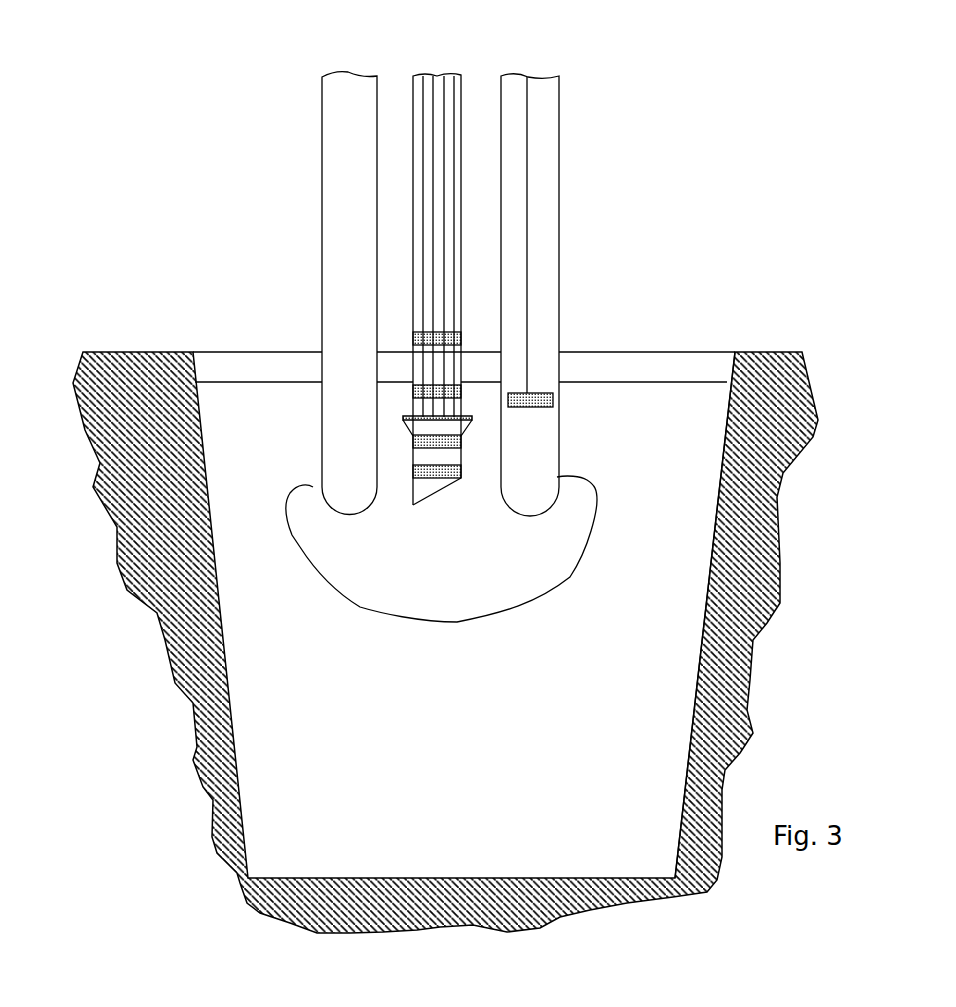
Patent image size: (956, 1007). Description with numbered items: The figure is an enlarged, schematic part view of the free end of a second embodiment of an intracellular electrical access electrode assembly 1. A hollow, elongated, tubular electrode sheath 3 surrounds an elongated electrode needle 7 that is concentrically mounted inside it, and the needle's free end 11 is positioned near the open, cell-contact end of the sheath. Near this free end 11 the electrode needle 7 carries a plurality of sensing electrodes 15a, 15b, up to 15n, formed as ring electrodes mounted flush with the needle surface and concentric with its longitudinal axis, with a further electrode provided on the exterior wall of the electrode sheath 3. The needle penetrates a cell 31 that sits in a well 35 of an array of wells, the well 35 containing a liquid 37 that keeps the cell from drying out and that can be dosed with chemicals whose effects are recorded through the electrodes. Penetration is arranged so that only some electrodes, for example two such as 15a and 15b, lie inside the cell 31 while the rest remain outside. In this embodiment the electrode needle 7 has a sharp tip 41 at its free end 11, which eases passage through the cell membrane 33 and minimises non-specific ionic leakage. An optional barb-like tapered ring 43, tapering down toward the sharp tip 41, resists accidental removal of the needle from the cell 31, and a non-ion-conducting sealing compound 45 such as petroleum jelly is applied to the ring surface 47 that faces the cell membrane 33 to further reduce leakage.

The electrode assembly 1 is at (608, 127).
The electrode sheath 3 is at (552, 196).
The electrode needle 7 is at (462, 150).
The free end 11 is at (416, 495).
The sensing electrode 15a is at (413, 465).
The sensing electrode 15b is at (415, 417).
The sensing electrode 15n is at (452, 340).
The cell 31 is at (575, 518).
The cell membrane 33 is at (308, 487).
The well 35 is at (205, 343).
The liquid 37 is at (615, 593).
The sharp tip 41 is at (430, 502).
The tapered ring 43 is at (453, 428).
The sealing compound 45 is at (448, 415).
The ring surface 47 is at (470, 418).